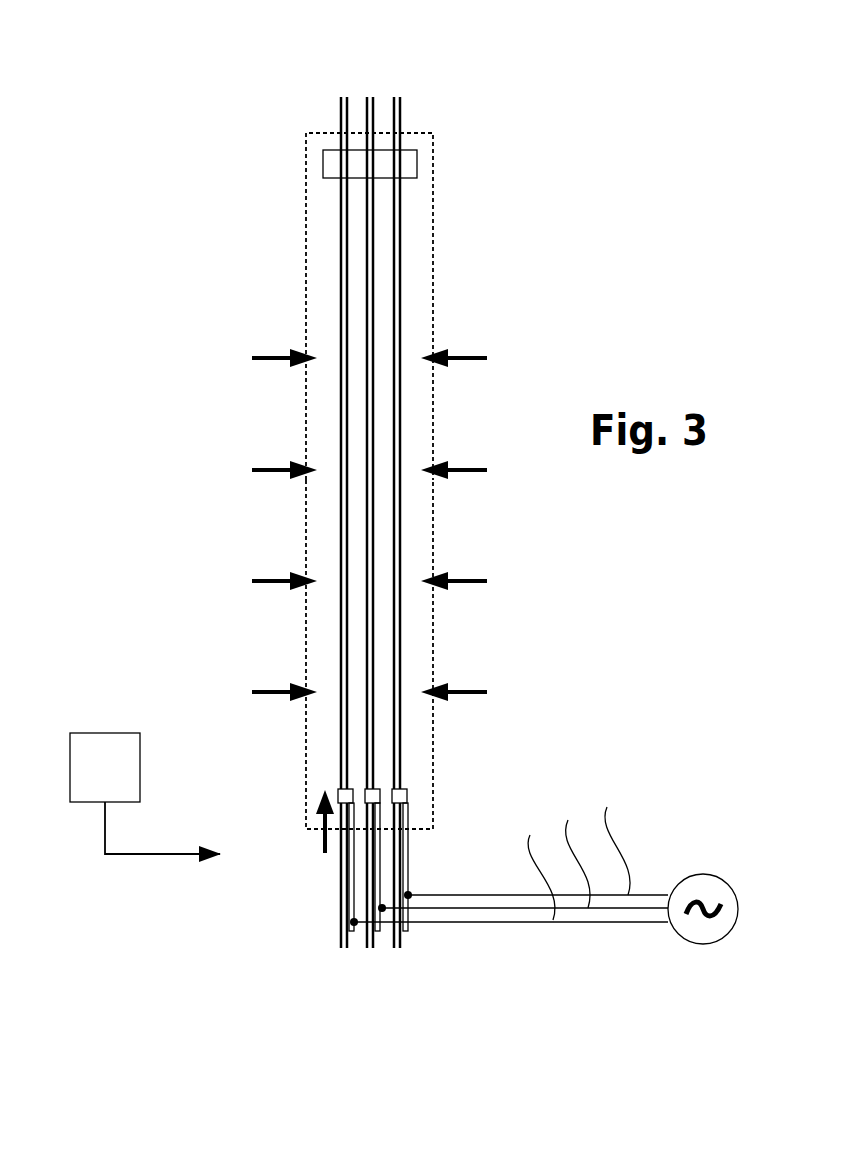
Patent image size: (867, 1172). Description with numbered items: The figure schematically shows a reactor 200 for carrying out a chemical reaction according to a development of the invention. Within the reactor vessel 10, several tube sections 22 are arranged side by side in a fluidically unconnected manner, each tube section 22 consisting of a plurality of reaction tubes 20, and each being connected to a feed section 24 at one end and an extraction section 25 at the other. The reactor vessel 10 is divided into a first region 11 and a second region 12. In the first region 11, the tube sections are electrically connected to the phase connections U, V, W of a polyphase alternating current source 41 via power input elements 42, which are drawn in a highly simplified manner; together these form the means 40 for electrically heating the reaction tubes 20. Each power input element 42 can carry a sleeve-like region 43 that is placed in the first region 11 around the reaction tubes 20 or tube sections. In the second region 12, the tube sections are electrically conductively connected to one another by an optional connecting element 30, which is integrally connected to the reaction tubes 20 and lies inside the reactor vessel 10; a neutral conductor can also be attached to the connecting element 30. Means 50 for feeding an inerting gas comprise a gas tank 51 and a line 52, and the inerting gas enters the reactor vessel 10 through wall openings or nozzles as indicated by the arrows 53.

The reactor 200 is at (263, 62).
The reactor vessel 10 is at (305, 552).
The first region 11 is at (450, 738).
The second region 12 is at (444, 202).
The reaction tube 20 is at (335, 395).
The tube section 22 is at (337, 350).
The feed section 24 is at (340, 867).
The extraction section 25 is at (400, 106).
The connecting element 30 is at (417, 167).
The means for electrically heating the reaction tube 40 is at (632, 950).
The polyphase alternating current source 41 is at (690, 873).
The power input element 42 is at (347, 905).
The sleeve-like region 43 is at (338, 790).
The means for feeding an inerting gas 50 is at (68, 855).
The gas tank 51 is at (118, 779).
The line 52 is at (102, 835).
The arrows 53 is at (277, 688).